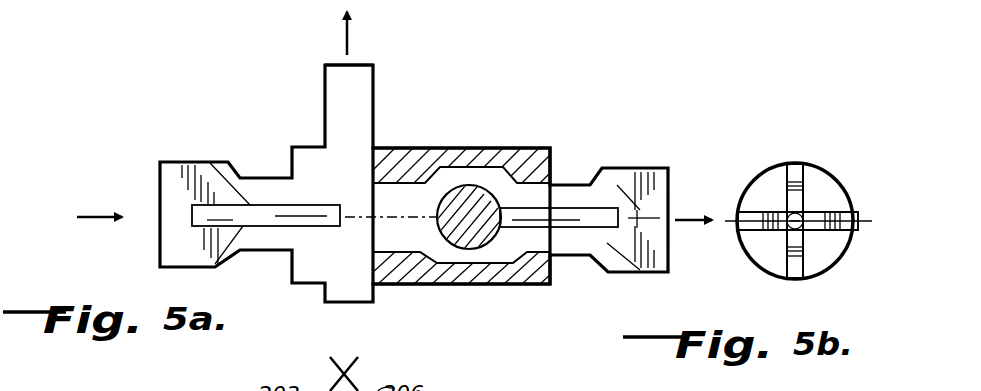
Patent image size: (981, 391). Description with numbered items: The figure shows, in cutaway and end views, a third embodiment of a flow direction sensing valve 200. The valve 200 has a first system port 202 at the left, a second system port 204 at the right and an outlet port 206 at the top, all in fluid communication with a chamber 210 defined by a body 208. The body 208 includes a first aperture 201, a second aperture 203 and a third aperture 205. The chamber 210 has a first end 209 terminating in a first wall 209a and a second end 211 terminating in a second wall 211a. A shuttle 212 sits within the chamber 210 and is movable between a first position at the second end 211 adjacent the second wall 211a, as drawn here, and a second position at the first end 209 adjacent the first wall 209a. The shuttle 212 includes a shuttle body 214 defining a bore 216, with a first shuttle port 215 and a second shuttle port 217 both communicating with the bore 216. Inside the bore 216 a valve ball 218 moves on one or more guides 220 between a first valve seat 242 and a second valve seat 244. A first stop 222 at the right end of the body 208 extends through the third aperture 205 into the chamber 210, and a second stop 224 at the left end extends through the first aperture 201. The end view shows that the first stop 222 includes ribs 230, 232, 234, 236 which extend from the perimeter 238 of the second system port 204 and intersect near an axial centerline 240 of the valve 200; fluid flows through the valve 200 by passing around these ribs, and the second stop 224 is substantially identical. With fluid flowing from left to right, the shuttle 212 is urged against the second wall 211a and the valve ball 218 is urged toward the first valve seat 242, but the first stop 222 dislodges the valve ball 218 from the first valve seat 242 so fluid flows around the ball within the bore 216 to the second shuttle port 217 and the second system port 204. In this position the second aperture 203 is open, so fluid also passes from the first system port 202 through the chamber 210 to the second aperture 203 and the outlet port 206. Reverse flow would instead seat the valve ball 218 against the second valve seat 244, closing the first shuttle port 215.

In FIG. 5A, the flow direction sensing valve 200 is at (150, 128).
In FIG. 5B, the flow direction sensing valve 200 is at (814, 146).
In FIG. 5A, the first aperture 201 is at (286, 198).
In FIG. 5A, the first system port 202 is at (158, 182).
In FIG. 5A, the second aperture 203 is at (323, 112).
In FIG. 5A, the second system port 204 is at (680, 187).
In FIG. 5A, the third aperture 205 is at (607, 277).
In FIG. 5A, the outlet port 206 is at (338, 60).
In FIG. 5A, the body 208 is at (317, 307).
In FIG. 5A, the first end 209 is at (312, 238).
In FIG. 5A, the first wall 209a is at (283, 196).
In FIG. 5A, the chamber 210 is at (317, 262).
In FIG. 5A, the second end 211 is at (525, 287).
In FIG. 5A, the second wall 211a is at (535, 287).
In FIG. 5A, the shuttle 212 is at (394, 134).
In FIG. 5A, the shuttle body 214 is at (402, 200).
In FIG. 5A, the first shuttle port 215 is at (374, 228).
In FIG. 5A, the bore 216 is at (418, 183).
In FIG. 5A, the second shuttle port 217 is at (553, 212).
In FIG. 5A, the valve ball 218 is at (471, 200).
In FIG. 5A, the guides 220 is at (513, 172).
In FIG. 5A, the first stop 222 is at (560, 208).
In FIG. 5A, the second stop 224 is at (250, 205).
In FIG. 5A, the rib 230 is at (615, 163).
In FIG. 5B, the rib 230 is at (795, 166).
In FIG. 5B, the rib 232 is at (832, 205).
In FIG. 5A, the rib 234 is at (640, 270).
In FIG. 5B, the rib 234 is at (787, 265).
In FIG. 5A, the rib 236 is at (663, 157).
In FIG. 5B, the rib 236 is at (753, 196).
In FIG. 5A, the perimeter 238 is at (688, 265).
In FIG. 5B, the perimeter 238 is at (777, 167).
In FIG. 5B, the axial centerline 240 is at (862, 227).
In FIG. 5A, the first valve seat 242 is at (512, 287).
In FIG. 5A, the second valve seat 244 is at (408, 288).